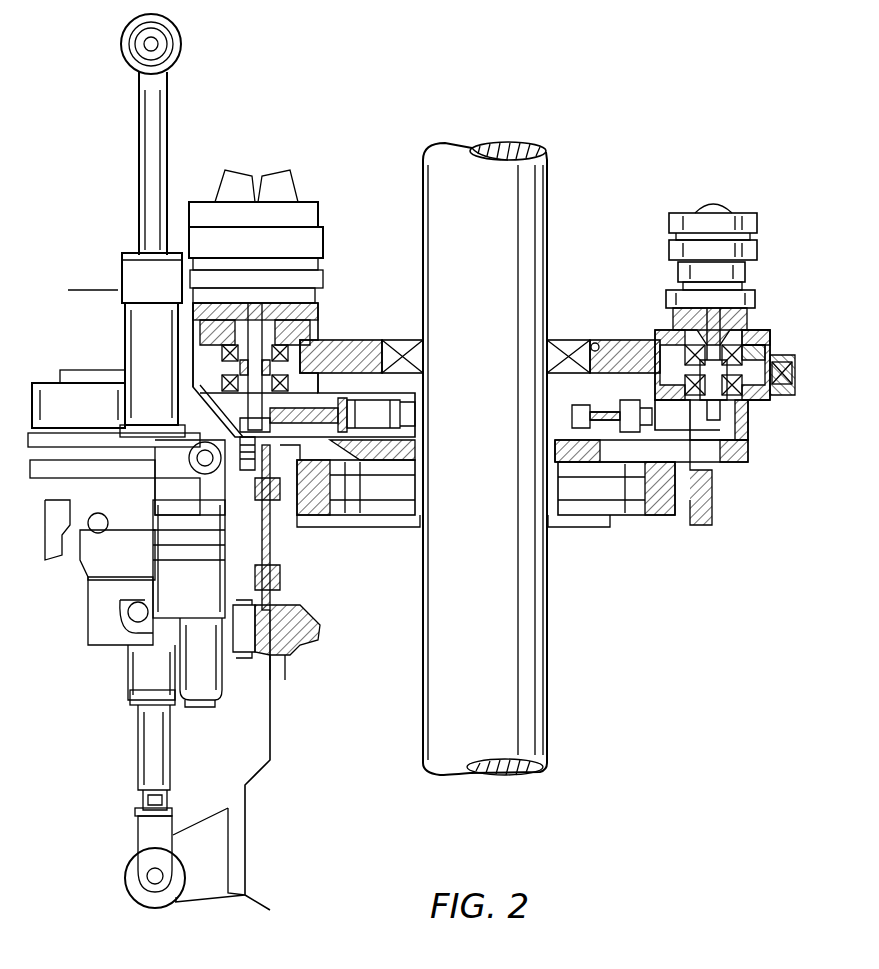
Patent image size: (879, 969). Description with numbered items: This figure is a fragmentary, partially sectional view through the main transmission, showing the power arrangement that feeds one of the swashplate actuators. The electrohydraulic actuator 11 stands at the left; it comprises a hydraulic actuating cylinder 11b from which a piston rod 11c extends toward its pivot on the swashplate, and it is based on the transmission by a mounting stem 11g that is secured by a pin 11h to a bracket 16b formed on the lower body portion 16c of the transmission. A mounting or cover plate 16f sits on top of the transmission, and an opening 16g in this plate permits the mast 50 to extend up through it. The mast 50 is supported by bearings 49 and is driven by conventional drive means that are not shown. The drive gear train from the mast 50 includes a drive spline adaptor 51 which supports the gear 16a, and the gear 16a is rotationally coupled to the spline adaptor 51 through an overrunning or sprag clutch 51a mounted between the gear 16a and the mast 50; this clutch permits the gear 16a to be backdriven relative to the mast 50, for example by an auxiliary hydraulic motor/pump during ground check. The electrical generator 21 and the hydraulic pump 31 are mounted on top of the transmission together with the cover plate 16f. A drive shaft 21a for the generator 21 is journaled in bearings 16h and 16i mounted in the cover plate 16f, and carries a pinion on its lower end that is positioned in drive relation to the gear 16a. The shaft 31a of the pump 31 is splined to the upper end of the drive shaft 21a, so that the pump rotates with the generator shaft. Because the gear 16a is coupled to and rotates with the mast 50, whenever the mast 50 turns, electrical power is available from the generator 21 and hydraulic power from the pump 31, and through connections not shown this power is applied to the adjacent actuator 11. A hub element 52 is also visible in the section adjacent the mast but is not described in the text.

The electrohydraulic actuator 11 is at (108, 331).
The hydraulic actuating cylinder 11b is at (166, 364).
The piston rod 11c is at (92, 419).
The mounting stem 11g is at (148, 748).
The pin 11h is at (152, 880).
The gear 16a is at (730, 443).
The bracket 16b is at (210, 885).
The lower body portion 16c is at (308, 722).
The cover plate 16f is at (355, 350).
The opening 16g is at (596, 343).
The bearing 16h is at (745, 408).
The bearing 16i is at (758, 340).
The electrical generator 21 is at (770, 362).
The drive shaft 21a is at (745, 335).
The hydraulic pump 31 is at (680, 254).
The pump shaft 31a is at (705, 332).
The bearings 49 is at (565, 342).
The mast 50 is at (512, 675).
The drive spline adaptor 51 is at (428, 480).
The overrunning clutch 51a is at (380, 412).
The right hub 52 is at (650, 489).